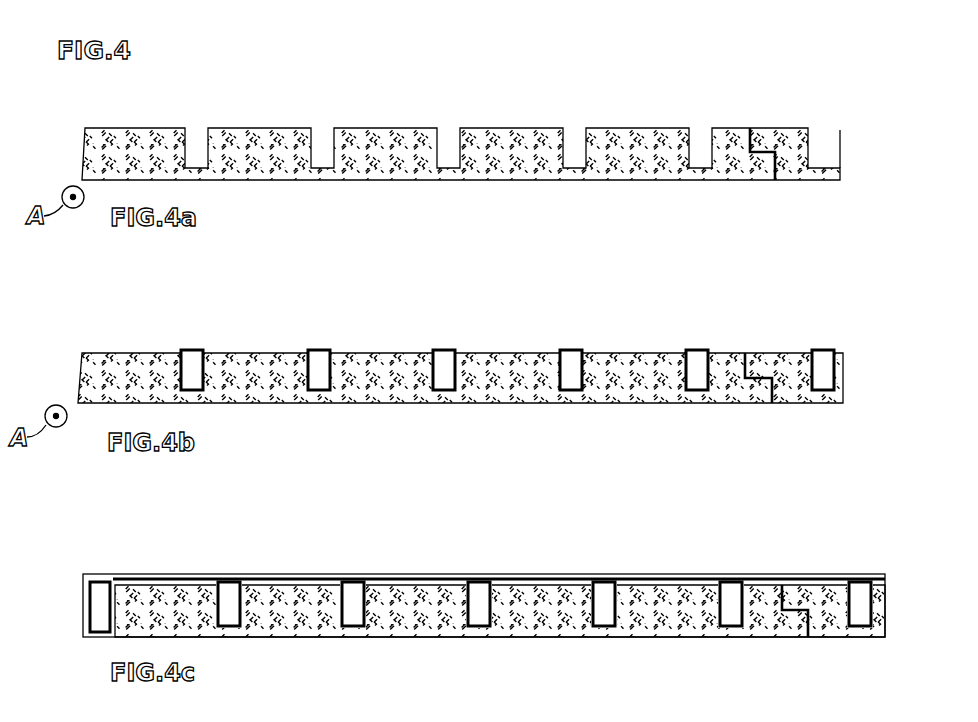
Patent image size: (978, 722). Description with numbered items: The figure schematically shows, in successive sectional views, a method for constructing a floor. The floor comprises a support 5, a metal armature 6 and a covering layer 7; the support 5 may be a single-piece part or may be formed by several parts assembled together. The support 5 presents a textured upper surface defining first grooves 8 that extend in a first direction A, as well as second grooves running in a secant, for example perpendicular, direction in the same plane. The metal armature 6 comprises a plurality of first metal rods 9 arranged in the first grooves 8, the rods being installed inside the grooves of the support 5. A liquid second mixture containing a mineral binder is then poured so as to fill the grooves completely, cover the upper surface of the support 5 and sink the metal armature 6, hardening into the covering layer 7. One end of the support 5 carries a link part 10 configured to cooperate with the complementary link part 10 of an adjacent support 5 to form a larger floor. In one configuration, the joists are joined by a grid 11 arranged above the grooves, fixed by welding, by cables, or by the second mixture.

In FIG. 4a, the support 5 is at (640, 155).
In FIG. 4b, the support 5 is at (380, 395).
In FIG. 4c, the support 5 is at (403, 630).
In FIG. 4b, the metal armature 6 is at (190, 350).
In FIG. 4c, the metal armature 6 is at (226, 582).
In FIG. 4c, the covering layer 7 is at (137, 585).
In FIG. 4a, the first grooves 8 is at (196, 146).
In FIG. 4b, the first metal rods 9 is at (203, 372).
In FIG. 4a, the link part 10 is at (755, 165).
In FIG. 4b, the link part 10 is at (755, 390).
In FIG. 4c, the link part 10 is at (795, 611).
In FIG. 4c, the grid 11 is at (250, 578).